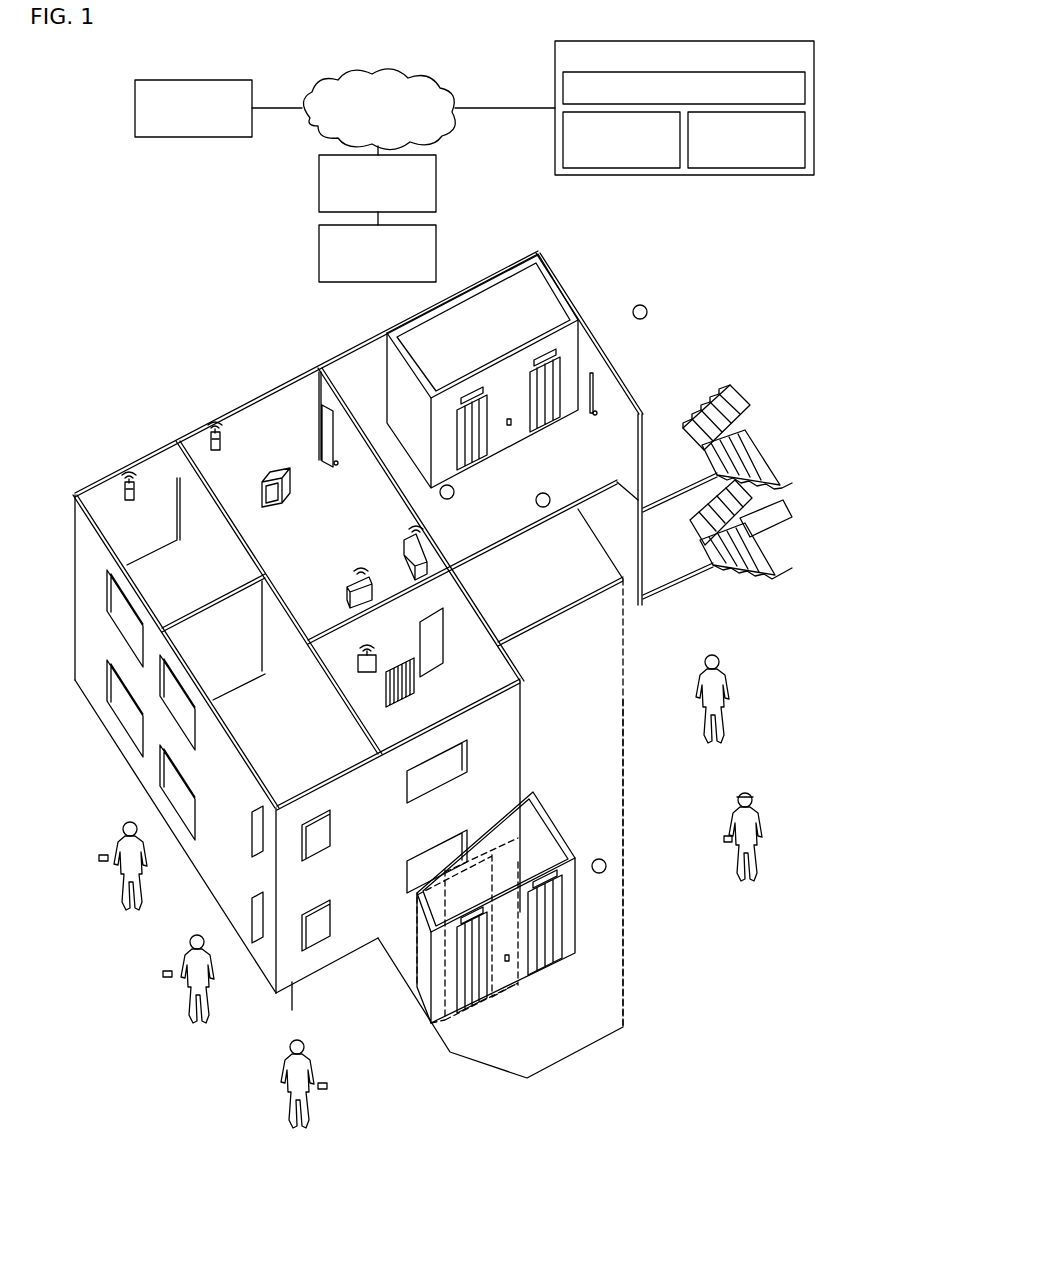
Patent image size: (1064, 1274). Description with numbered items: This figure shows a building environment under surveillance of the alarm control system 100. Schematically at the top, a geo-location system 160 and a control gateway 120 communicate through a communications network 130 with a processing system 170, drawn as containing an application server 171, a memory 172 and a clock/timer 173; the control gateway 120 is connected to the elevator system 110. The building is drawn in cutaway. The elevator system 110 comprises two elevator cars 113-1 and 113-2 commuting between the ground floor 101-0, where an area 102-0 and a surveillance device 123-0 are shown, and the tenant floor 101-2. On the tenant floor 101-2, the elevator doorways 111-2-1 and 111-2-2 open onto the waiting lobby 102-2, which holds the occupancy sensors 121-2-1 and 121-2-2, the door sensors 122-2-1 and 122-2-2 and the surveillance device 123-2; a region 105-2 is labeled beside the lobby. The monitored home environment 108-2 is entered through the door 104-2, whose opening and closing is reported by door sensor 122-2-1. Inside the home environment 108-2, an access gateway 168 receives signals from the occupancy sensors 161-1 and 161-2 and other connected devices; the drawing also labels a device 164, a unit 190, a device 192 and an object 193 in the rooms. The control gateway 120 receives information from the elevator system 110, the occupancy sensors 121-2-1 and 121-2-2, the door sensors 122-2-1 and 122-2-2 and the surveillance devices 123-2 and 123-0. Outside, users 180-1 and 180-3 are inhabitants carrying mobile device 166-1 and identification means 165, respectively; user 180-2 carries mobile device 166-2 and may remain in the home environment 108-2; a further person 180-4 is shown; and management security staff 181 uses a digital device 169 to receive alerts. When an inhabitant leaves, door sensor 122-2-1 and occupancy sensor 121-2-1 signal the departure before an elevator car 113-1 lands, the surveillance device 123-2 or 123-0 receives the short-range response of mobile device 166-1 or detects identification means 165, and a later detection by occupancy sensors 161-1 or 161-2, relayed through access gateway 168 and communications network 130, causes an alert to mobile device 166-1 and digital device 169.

The elevator control system 100 is at (49, 51).
The elevator system 110 is at (377, 253).
The control gateway 120 is at (377, 183).
The communications network 130 is at (379, 109).
The geo-location system 160 is at (193, 108).
The processing system 170 is at (684, 108).
The application server 171 is at (684, 88).
The memory 172 is at (621, 140).
The clock / timer 173 is at (746, 140).
The ground floor 101-0 is at (593, 993).
The tenant floor 101-2 is at (651, 485).
The ground floor elevator lobby 102-0 is at (500, 1008).
The waiting lobby 102-2 is at (473, 559).
The door 104-2 is at (326, 448).
The hallway 105-2 is at (594, 380).
The home environment 108-2 is at (279, 597).
The elevator doorway 111-2-1 is at (495, 438).
The elevator doorway 111-2-2 is at (568, 400).
The elevator car 113-1 is at (417, 905).
The elevator car 113-2 is at (578, 806).
The occupancy sensor 121-2-1 is at (453, 503).
The occupancy sensor 121-2-2 is at (630, 301).
The door sensor 122-2-1 is at (368, 475).
The door sensor 122-2-2 is at (596, 412).
The surveillance device 123-0 is at (625, 867).
The surveillance device 123-2 is at (523, 512).
The occupancy sensor 161-1 is at (224, 450).
The occupancy sensor 161-2 is at (190, 552).
The wireless device 164 is at (349, 658).
The identification means 165 is at (327, 1087).
The mobile device 166-1 is at (99, 859).
The mobile device 166-2 is at (163, 975).
The access gateway 168 is at (342, 589).
The digital device 169 is at (724, 839).
The user 180-1 is at (134, 855).
The user 180-2 is at (197, 968).
The user 180-3 is at (296, 1072).
The person 180-4 is at (716, 688).
The management security staff 181 is at (750, 827).
The heating unit 190 is at (408, 693).
The device 192 is at (398, 553).
The safe 193 is at (270, 498).